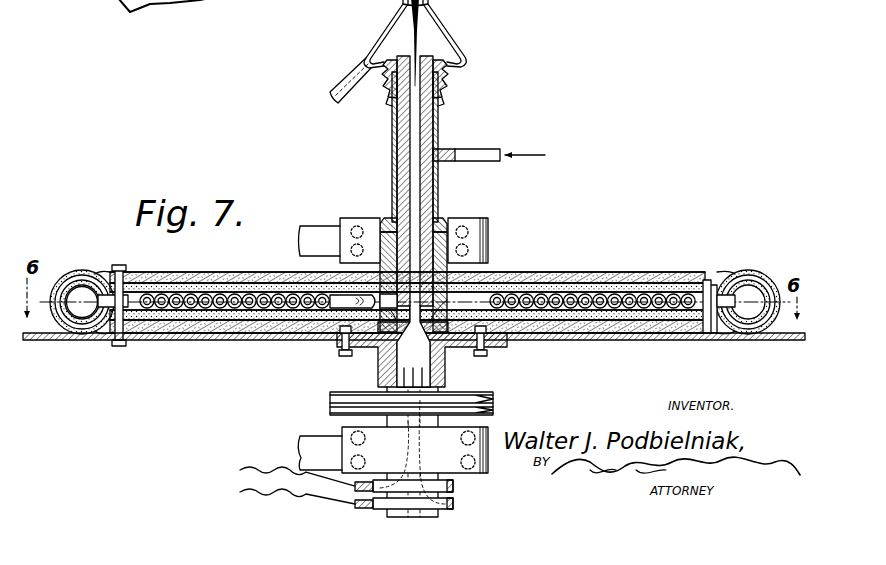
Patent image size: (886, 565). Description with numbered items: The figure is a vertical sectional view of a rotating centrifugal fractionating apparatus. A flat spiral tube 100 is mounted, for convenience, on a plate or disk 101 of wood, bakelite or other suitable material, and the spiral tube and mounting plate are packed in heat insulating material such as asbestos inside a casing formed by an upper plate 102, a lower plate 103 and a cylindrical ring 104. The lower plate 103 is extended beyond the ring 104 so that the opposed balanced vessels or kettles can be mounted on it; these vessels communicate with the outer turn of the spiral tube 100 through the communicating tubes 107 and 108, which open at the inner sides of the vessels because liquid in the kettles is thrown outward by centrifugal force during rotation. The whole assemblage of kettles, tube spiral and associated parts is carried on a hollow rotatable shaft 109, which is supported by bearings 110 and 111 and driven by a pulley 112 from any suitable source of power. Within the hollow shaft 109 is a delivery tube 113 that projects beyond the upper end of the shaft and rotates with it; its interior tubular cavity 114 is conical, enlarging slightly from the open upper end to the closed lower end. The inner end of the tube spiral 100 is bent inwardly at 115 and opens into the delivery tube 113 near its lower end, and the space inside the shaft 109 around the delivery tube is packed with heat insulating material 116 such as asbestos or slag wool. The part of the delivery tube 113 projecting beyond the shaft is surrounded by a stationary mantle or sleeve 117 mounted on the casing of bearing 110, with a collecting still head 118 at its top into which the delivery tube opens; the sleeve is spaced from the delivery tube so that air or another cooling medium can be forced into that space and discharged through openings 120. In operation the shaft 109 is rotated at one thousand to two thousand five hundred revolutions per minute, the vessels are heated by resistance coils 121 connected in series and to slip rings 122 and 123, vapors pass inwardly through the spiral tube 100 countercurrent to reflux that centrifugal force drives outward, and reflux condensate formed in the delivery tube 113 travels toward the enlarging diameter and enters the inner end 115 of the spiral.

The flat spiral tube 100 is at (612, 296).
The mounting plate 101 is at (508, 296).
The upper plate 102 is at (656, 284).
The lower plate 103 is at (622, 342).
The cylindrical ring 104 is at (122, 334).
The communicating tube 107 is at (713, 292).
The communicating tube 108 is at (94, 312).
The hollow rotatable shaft 109 is at (388, 360).
The bearing 110 is at (490, 241).
The bearing 111 is at (344, 428).
The pulley 112 is at (340, 392).
The delivery tube 113 is at (428, 120).
The interior tubular cavity 114 is at (425, 305).
The inner end of tube spiral 115 is at (355, 296).
The heat insulating material 116 is at (438, 222).
The stationary mantle or sleeve 117 is at (392, 135).
The collecting still head 118 is at (450, 42).
The openings 120 is at (450, 100).
The resistance coils 121 is at (68, 272).
The slip ring 122 is at (455, 485).
The slip ring 123 is at (455, 503).